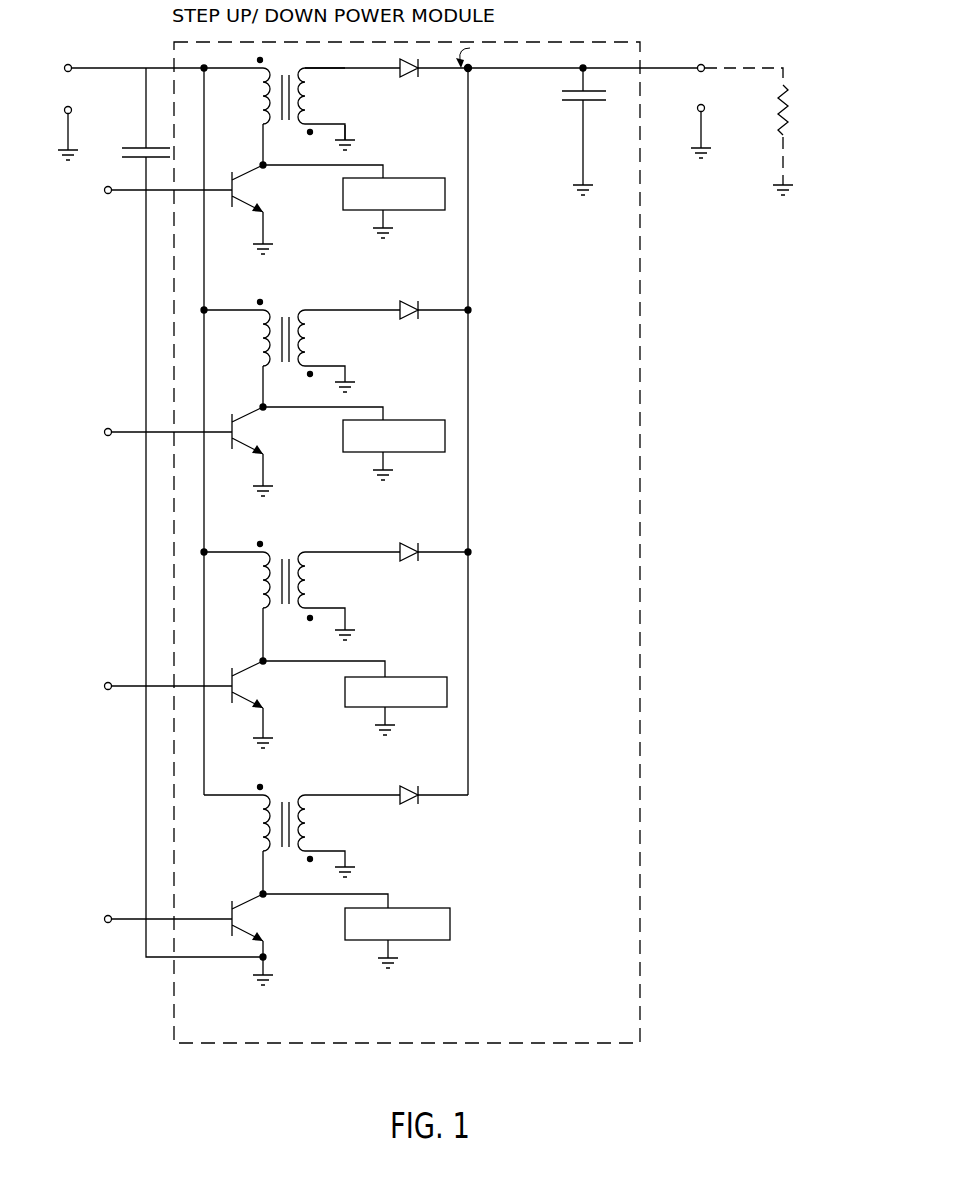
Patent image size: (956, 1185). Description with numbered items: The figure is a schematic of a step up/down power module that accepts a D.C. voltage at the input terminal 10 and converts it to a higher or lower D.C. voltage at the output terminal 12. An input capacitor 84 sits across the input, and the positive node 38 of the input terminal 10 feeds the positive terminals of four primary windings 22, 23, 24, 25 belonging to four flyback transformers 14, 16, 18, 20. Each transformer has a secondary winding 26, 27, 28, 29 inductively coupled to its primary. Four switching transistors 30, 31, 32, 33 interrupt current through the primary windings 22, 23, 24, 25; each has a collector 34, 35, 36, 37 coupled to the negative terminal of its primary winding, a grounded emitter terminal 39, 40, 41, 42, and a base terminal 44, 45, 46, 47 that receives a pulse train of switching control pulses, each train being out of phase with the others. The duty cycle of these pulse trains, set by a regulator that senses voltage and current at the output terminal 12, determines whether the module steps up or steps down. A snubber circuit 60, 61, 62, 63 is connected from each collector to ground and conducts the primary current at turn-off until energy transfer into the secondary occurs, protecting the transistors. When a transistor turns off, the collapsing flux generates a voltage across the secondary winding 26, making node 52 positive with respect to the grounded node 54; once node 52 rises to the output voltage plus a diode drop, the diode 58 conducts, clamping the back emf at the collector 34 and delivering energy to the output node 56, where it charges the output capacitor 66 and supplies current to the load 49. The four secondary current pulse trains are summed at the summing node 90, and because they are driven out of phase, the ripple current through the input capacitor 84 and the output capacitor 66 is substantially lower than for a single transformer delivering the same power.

The input terminal 10 is at (50, 60).
The output terminal 12 is at (716, 63).
The flyback transformer 14 is at (286, 123).
The flyback transformer 16 is at (304, 320).
The flyback transformer 18 is at (304, 560).
The flyback transformer 20 is at (306, 807).
The primary winding 22 is at (262, 107).
The primary winding 23 is at (237, 335).
The primary winding 24 is at (237, 577).
The primary winding 25 is at (237, 820).
The secondary winding 26 is at (310, 101).
The secondary winding 27 is at (349, 351).
The secondary winding 28 is at (349, 596).
The secondary winding 29 is at (349, 836).
The switching transistor 30 is at (236, 194).
The switching transistor 31 is at (259, 434).
The switching transistor 32 is at (259, 688).
The switching transistor 33 is at (259, 921).
The collector 34 is at (260, 162).
The collector 35 is at (240, 394).
The collector 36 is at (248, 642).
The collector 37 is at (243, 880).
The positive node 38 is at (88, 66).
The emitter terminal 39 is at (250, 203).
The emitter terminal 40 is at (281, 467).
The emitter terminal 41 is at (281, 721).
The emitter terminal 42 is at (281, 954).
The base terminal 44 is at (186, 192).
The base terminal 45 is at (153, 455).
The base terminal 46 is at (153, 713).
The base terminal 47 is at (153, 944).
The load 49 is at (778, 133).
The node 52 is at (343, 66).
The node 54 is at (347, 125).
The output node 56 is at (664, 70).
The diode 58 is at (411, 62).
The snubber circuit 60 is at (395, 178).
The snubber circuit 61 is at (354, 437).
The snubber circuit 62 is at (355, 687).
The snubber circuit 63 is at (359, 923).
The output capacitor 66 is at (565, 98).
The input capacitor 84 is at (140, 148).
The summing node 90 is at (470, 74).